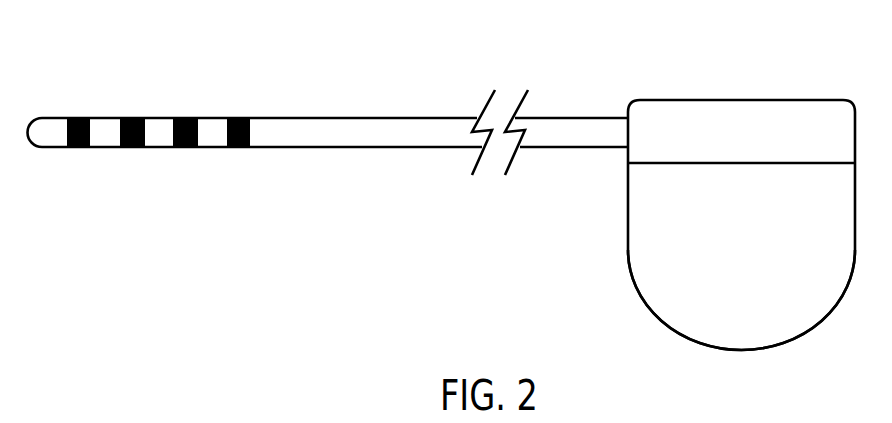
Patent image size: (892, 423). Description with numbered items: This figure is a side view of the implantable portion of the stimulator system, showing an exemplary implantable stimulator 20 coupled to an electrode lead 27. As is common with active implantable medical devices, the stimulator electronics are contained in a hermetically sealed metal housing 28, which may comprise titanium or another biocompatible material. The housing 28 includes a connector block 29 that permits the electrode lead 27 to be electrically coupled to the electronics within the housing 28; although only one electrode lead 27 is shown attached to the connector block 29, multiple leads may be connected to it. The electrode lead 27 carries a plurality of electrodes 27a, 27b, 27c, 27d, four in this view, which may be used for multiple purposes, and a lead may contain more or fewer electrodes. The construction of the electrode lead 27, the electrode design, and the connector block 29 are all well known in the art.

The implantable stimulator 20 is at (743, 184).
The electrode lead 27 is at (285, 118).
The electrode 27a is at (79, 118).
The electrode 27b is at (133, 118).
The electrode 27c is at (183, 147).
The electrode 27d is at (235, 147).
The housing 28 is at (753, 254).
The connector block 29 is at (753, 145).